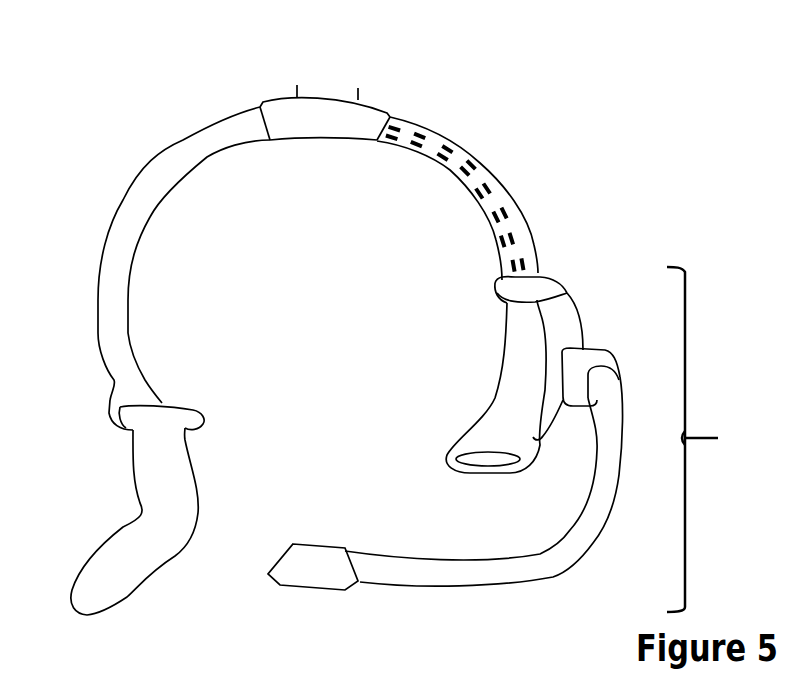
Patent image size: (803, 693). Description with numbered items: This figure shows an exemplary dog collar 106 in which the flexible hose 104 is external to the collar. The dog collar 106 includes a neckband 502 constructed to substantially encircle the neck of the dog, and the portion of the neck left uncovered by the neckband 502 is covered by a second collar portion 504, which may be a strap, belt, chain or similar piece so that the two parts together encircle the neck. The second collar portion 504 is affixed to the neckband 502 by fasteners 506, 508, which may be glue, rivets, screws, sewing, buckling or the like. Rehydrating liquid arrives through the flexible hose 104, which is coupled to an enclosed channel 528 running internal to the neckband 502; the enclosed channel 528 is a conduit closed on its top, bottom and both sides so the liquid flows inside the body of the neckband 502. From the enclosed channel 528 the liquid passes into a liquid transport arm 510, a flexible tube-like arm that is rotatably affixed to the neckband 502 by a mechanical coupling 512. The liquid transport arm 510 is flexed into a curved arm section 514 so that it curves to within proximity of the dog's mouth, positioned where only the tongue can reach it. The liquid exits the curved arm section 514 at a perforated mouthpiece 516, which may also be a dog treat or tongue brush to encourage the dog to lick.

The flexible hose 104 is at (366, 91).
The dog collar 106 is at (172, 121).
The neckband 502 is at (519, 202).
The second collar portion 504 is at (117, 517).
The fastener 506 is at (161, 402).
The fastener 508 is at (454, 436).
The liquid transport arm 510 is at (524, 439).
The mechanical coupling 512 is at (494, 294).
The curved arm section 514 is at (566, 518).
The perforated mouthpiece 516 is at (313, 541).
The enclosed channel 528 is at (414, 141).